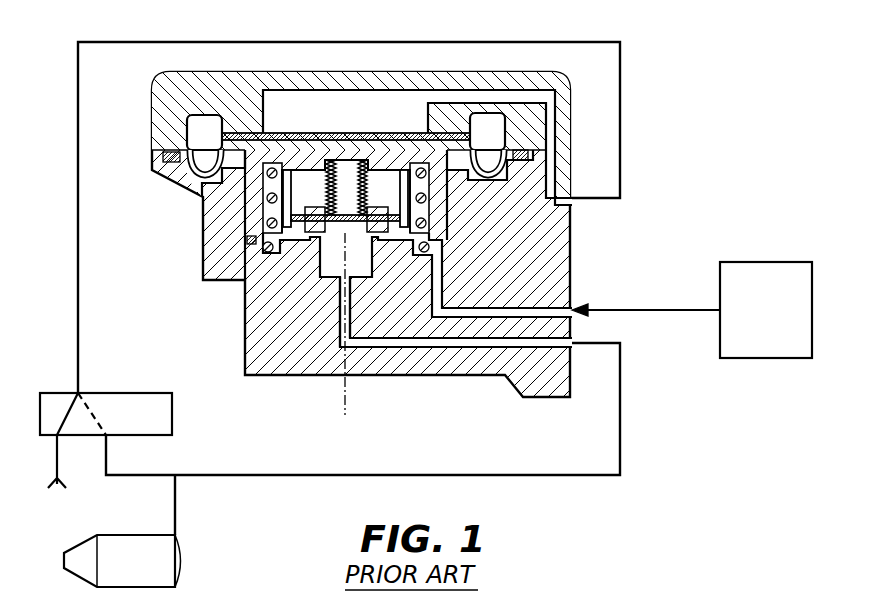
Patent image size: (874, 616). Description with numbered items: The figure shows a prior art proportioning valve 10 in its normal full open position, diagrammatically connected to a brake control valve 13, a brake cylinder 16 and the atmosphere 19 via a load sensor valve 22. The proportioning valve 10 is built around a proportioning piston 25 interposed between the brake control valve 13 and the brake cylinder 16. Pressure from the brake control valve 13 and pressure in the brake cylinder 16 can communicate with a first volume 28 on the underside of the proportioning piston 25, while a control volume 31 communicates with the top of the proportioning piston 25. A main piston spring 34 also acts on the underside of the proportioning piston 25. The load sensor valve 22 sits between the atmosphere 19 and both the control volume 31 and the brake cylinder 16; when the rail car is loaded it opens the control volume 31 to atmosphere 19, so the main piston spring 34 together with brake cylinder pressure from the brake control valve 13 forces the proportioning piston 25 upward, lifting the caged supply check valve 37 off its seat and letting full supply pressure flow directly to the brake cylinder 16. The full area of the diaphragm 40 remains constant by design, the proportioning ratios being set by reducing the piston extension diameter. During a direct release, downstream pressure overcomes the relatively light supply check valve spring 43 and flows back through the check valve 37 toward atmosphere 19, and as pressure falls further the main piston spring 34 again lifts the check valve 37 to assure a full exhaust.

The proportioning valve 10 is at (296, 377).
The brake control valve 13 is at (765, 262).
The brake cylinder 16 is at (137, 535).
The atmosphere 19 is at (52, 487).
The load sensor valve 22 is at (125, 393).
The proportioning piston 25 is at (252, 250).
The first volume 28 is at (362, 246).
The control volume 31 is at (355, 106).
The main piston spring 34 is at (386, 176).
The caged supply check valve 37 is at (317, 268).
The diaphragm 40 is at (207, 162).
The supply check valve spring 43 is at (325, 185).